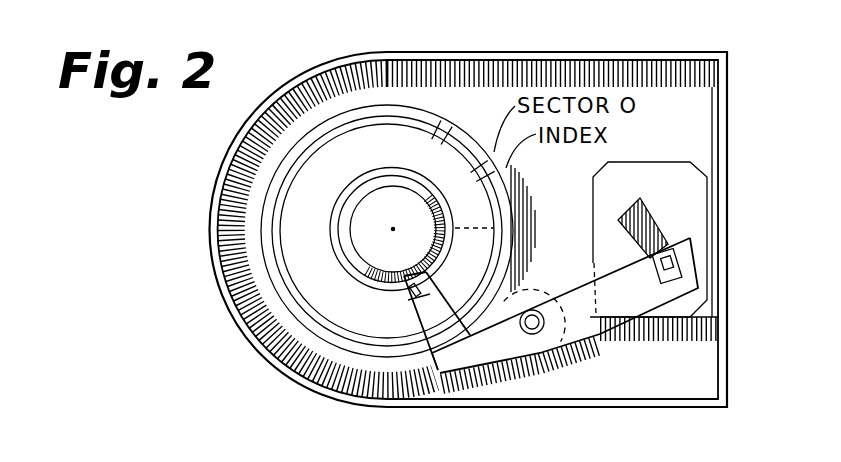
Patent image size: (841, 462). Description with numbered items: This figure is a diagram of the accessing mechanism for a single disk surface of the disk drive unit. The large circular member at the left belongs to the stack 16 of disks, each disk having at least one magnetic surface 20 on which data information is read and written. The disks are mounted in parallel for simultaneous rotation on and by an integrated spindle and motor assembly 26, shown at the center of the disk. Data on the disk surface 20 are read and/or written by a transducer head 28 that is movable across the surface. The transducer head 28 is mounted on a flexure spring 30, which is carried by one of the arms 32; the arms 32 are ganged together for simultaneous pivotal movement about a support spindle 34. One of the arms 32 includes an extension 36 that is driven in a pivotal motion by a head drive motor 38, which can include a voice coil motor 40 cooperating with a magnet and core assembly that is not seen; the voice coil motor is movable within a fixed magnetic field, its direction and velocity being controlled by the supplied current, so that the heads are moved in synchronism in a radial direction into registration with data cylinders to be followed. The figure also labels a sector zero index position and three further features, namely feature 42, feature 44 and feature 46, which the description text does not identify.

The stack 16 is at (245, 206).
The magnetic surface 20 is at (300, 147).
The integrated spindle and motor assembly 26 is at (358, 228).
The transducer head 28 is at (407, 298).
The flexure spring 30 is at (427, 310).
The arm 32 is at (473, 350).
The support spindle 34 is at (536, 334).
The extension 36 is at (645, 293).
The head drive motor 38 is at (681, 192).
The voice coil motor 40 is at (678, 263).
The friction surface 42 is at (385, 286).
The sector index marks 44 is at (450, 130).
The cover 46 is at (729, 128).